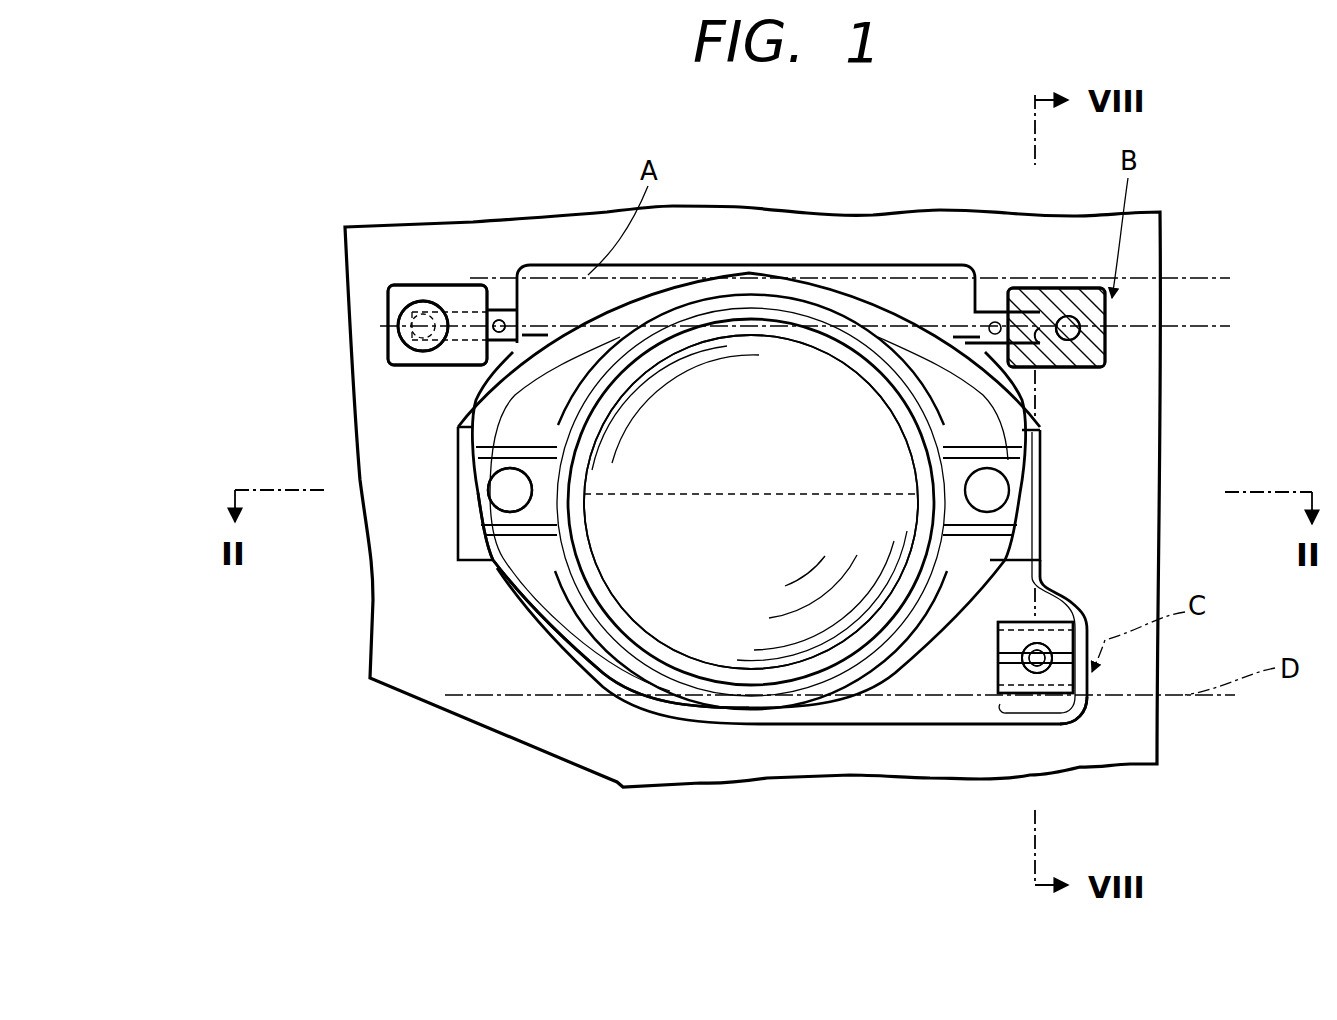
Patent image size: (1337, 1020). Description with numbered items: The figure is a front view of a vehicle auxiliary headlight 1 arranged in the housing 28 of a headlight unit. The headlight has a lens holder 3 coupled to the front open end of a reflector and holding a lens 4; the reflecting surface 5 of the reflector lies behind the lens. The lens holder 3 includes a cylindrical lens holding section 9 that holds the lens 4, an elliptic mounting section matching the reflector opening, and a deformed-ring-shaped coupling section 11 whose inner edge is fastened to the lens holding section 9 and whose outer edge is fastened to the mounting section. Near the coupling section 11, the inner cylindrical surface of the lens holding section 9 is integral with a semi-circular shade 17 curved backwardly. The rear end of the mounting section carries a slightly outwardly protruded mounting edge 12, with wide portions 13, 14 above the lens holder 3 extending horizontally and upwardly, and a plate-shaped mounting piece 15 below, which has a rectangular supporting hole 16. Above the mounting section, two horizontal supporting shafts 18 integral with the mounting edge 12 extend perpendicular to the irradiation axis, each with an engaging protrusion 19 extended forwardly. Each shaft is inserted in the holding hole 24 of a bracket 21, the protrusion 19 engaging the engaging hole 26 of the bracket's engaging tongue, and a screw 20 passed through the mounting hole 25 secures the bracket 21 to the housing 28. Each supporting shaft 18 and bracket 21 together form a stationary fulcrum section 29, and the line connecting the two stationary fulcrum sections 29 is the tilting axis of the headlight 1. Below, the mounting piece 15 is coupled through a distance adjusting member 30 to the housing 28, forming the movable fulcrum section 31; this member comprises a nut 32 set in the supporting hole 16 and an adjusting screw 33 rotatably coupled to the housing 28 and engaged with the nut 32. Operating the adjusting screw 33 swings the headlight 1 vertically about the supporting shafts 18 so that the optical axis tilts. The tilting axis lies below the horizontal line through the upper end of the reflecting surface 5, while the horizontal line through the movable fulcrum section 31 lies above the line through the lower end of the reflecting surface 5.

The auxiliary headlight 1 is at (857, 477).
The lens holder 3 is at (535, 597).
The lens 4 is at (737, 634).
The reflecting surface 5 is at (794, 585).
The lens holding section 9 is at (560, 420).
The coupling section 11 is at (570, 620).
The mounting edge 12 is at (705, 700).
The wide portion 13 is at (555, 335).
The wide portion 14 is at (925, 268).
The mounting piece 15 is at (975, 730).
The supporting hole 16 is at (1067, 612).
The shade 17 is at (752, 494).
The supporting shaft 18 is at (548, 300).
The engaging protrusion 19 is at (508, 322).
The screw 20 is at (437, 302).
The bracket 21 is at (395, 352).
The holding hole 24 is at (467, 310).
The mounting hole 25 is at (405, 318).
The engaging hole 26 is at (500, 318).
The housing 28 is at (1145, 486).
The stationary fulcrum section 29 is at (402, 262).
The distance adjusting member 30 is at (1100, 670).
The movable fulcrum section 31 is at (1088, 726).
The nut 32 is at (1060, 677).
The adjusting screw 33 is at (1023, 660).